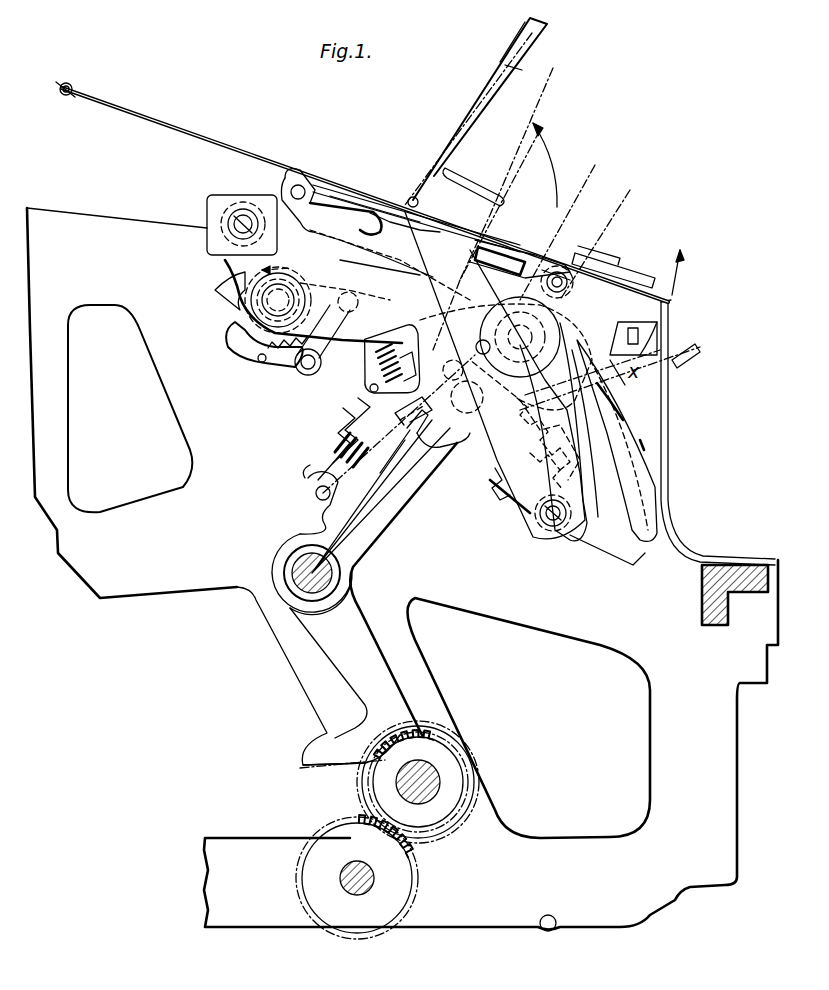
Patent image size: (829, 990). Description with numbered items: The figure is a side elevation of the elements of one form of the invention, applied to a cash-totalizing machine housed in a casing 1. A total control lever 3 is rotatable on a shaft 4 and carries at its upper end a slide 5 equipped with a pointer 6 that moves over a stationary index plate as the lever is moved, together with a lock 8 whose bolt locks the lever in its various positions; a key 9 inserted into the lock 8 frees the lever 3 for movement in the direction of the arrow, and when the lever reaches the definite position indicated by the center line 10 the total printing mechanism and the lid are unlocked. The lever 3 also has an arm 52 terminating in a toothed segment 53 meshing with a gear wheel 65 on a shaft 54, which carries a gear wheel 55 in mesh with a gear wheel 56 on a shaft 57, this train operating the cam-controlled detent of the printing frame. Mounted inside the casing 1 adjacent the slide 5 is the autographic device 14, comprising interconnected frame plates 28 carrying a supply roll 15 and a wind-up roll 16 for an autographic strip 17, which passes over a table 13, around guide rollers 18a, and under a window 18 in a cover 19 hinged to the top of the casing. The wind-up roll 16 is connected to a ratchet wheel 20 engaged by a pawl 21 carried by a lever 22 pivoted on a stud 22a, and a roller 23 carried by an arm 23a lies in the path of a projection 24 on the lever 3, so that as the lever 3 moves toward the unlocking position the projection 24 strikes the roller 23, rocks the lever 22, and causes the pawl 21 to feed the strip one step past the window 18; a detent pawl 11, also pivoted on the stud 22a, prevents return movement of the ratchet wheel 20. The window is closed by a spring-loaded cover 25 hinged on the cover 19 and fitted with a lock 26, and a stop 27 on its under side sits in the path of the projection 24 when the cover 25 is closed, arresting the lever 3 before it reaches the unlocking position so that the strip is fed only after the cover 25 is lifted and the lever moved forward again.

The casing 1 is at (690, 548).
The total control lever 3 is at (402, 512).
The shaft 4 is at (332, 575).
The slide 5 is at (637, 483).
The pointer 6 is at (510, 252).
The lock 8 is at (590, 433).
The key 9 is at (688, 362).
The center line 10 is at (330, 466).
The detent pawl 11 is at (375, 234).
The table 13 is at (490, 240).
The autographic device 14 is at (335, 235).
The supply roll 15 is at (475, 300).
The wind-up roll 16 is at (250, 308).
The autographic strip 17 is at (373, 200).
The window 18 is at (545, 268).
The guide rollers 18a is at (578, 295).
The cover 19 is at (228, 143).
The ratchet wheel 20 is at (240, 294).
The pawl 21 is at (248, 358).
The lever 22 is at (330, 350).
The stud 22a is at (315, 262).
The roller 23 is at (375, 350).
The arm 23a is at (360, 303).
The projection 24 is at (435, 438).
The spring-loaded cover 25 is at (540, 45).
The lock 26 is at (620, 265).
The stop 27 is at (495, 205).
The frame plates 28 is at (520, 505).
The arm 52 is at (388, 700).
The toothed segment 53 is at (325, 770).
The shaft 54 is at (430, 795).
The gear wheel 55 is at (455, 830).
The gear wheel 56 is at (415, 875).
The shaft 57 is at (345, 895).
The gear wheel 65 is at (463, 770).